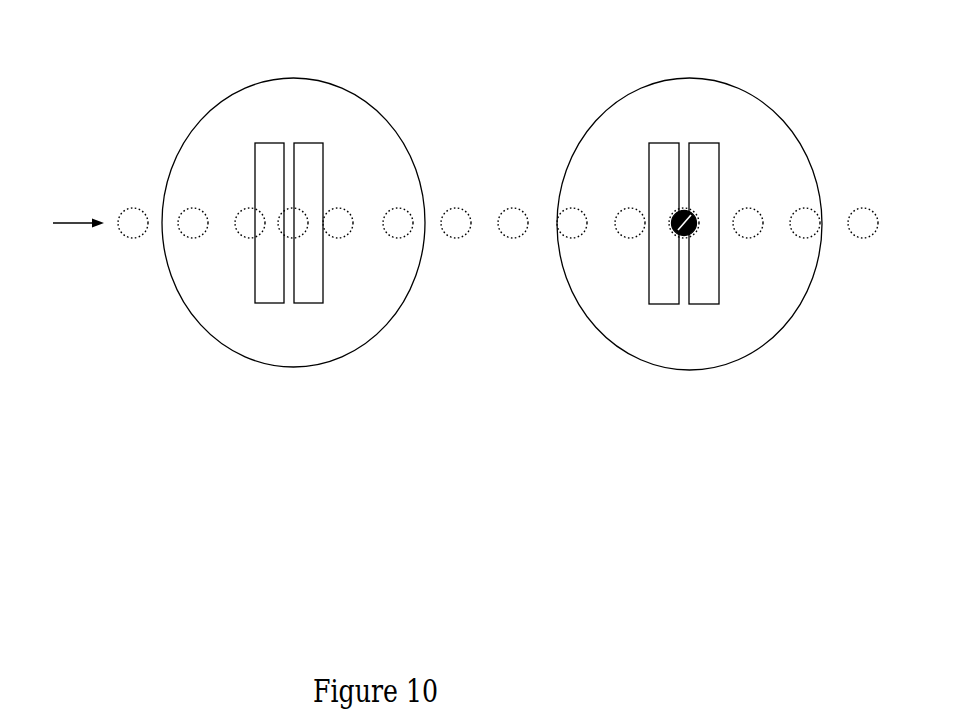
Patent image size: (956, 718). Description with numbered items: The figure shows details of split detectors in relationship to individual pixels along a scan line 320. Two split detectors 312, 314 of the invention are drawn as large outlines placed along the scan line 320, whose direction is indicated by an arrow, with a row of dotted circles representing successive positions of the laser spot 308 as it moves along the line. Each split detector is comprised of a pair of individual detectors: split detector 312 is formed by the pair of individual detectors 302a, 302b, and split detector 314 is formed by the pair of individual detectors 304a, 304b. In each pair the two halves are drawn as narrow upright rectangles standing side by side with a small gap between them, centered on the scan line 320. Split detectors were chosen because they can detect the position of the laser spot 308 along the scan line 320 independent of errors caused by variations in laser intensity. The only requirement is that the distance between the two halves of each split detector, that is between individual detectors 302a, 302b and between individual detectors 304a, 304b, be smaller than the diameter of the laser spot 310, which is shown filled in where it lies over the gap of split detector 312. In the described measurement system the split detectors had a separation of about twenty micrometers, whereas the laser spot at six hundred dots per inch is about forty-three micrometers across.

The laser spot 308 is at (860, 225).
The scan line 320 is at (55, 222).
The split detector 314 is at (185, 173).
The split detector 312 is at (595, 160).
The laser spot 310 is at (695, 212).
The individual detector 304a is at (303, 298).
The individual detector 304b is at (265, 298).
The individual detector 302a is at (702, 297).
The individual detector 302b is at (652, 298).